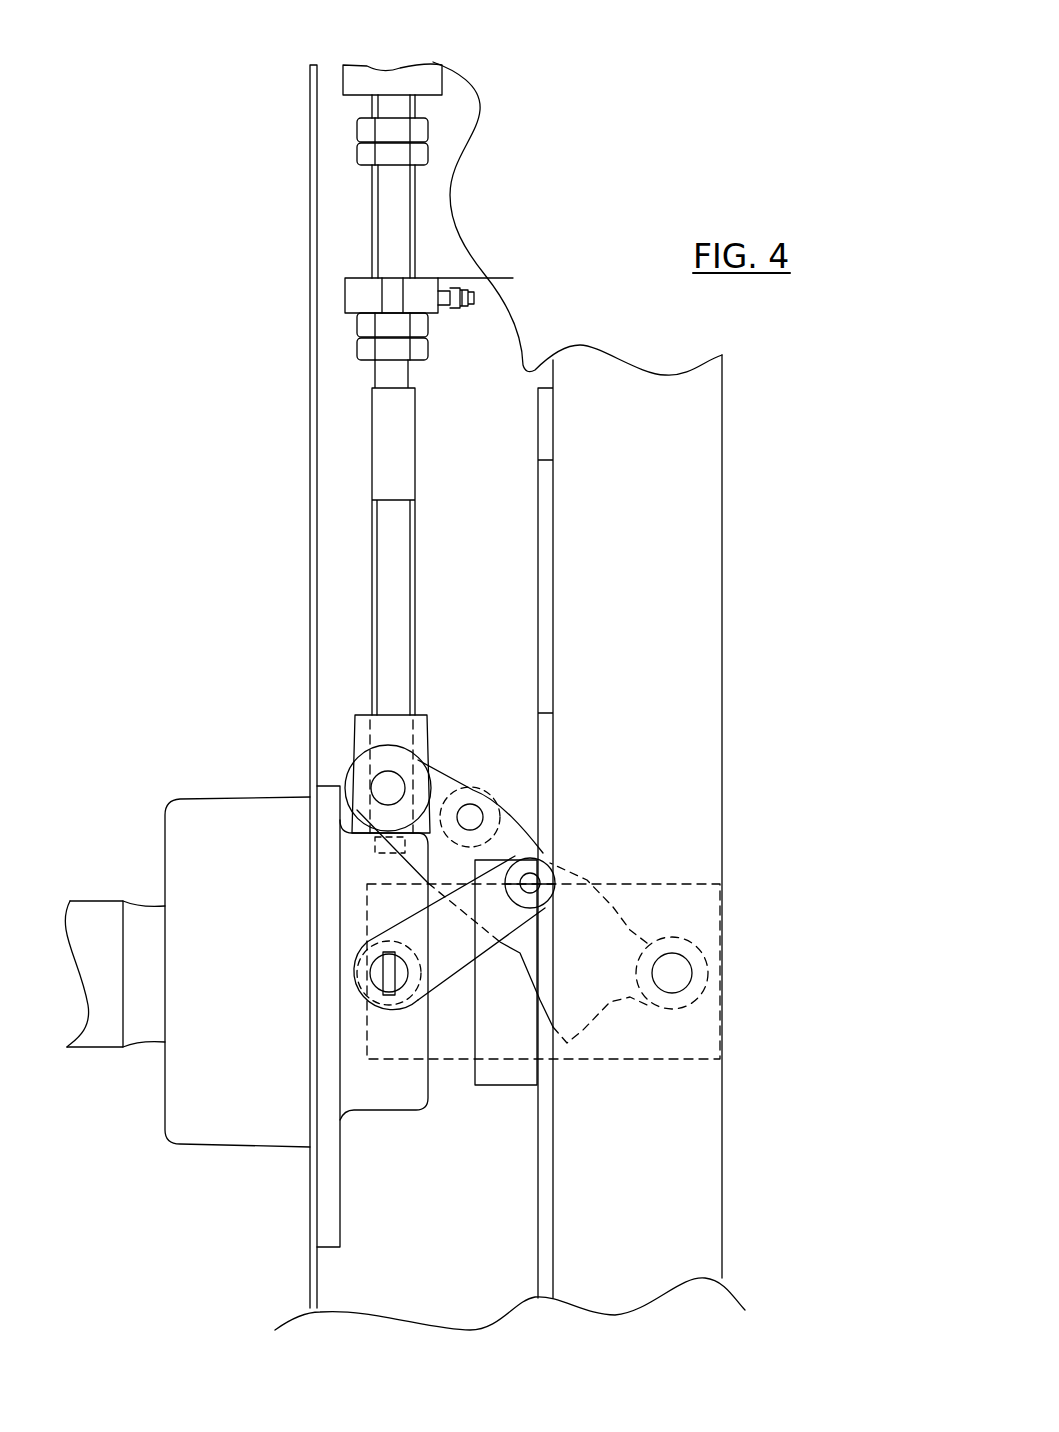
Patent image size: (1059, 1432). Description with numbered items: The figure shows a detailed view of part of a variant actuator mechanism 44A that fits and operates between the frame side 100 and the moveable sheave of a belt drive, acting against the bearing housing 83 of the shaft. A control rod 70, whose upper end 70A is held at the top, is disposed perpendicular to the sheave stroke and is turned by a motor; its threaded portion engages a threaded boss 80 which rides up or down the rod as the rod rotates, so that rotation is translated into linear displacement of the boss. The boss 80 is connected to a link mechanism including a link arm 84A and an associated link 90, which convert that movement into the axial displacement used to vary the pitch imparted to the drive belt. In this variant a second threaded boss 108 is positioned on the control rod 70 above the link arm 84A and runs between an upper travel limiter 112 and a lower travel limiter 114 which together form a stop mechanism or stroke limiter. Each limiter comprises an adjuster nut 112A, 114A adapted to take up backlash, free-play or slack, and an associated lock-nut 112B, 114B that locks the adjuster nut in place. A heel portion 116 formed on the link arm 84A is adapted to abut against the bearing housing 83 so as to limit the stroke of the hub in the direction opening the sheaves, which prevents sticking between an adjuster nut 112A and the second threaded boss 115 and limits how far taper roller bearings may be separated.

The actuator mechanism 44A is at (608, 152).
The control rod 70 is at (380, 563).
The control rod end 70A is at (442, 82).
The threaded boss 80 is at (362, 728).
The bearing housing 83 is at (178, 817).
The link arm 84A is at (612, 935).
The link arm 90 is at (457, 957).
The frame side 100 is at (310, 1196).
The second threaded boss 108 is at (359, 296).
The upper travel limiter 112 is at (295, 114).
The adjuster nut 112A is at (361, 156).
The lock-nut 112B is at (359, 133).
The lower travel limiter 114 is at (288, 392).
The adjuster nut 114A is at (357, 330).
The lock-nut 114B is at (365, 361).
The second threaded boss 115 is at (392, 298).
The heel portion 116 is at (587, 1020).